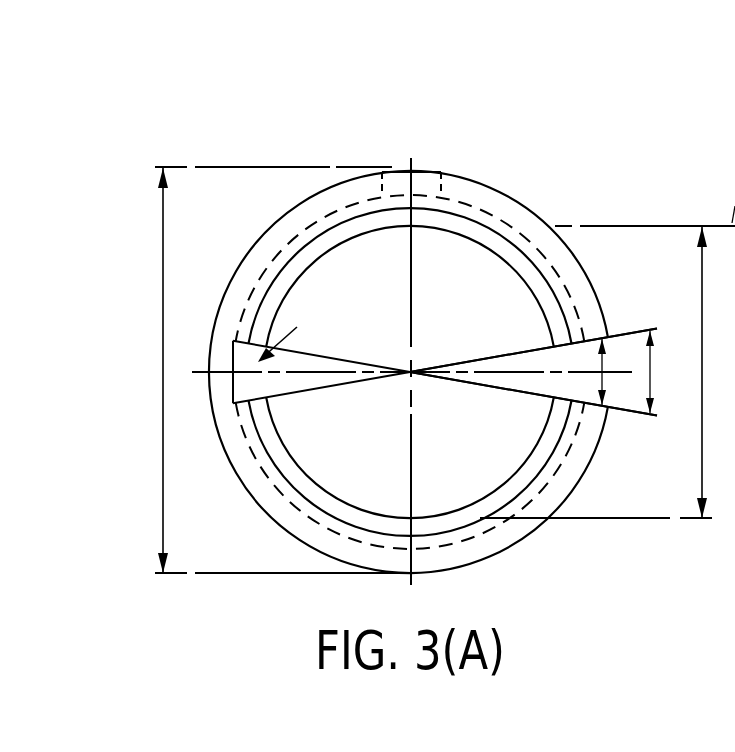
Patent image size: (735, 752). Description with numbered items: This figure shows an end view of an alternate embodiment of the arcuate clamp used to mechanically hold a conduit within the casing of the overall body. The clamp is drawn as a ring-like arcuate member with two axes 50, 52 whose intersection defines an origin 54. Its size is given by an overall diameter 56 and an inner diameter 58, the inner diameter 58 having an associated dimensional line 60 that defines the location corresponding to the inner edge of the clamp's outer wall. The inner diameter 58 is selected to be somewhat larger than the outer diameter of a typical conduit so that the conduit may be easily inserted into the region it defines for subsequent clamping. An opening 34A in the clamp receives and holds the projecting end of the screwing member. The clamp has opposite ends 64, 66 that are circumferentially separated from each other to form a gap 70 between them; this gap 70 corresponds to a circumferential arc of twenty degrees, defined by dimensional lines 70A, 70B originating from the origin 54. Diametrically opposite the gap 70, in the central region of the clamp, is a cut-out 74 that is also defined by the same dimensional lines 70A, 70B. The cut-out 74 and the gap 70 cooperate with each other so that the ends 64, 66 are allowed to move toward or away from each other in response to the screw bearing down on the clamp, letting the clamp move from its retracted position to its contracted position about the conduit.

The opening 34A is at (430, 170).
The axis 50 is at (412, 297).
The axis 52 is at (552, 363).
The origin 54 is at (412, 371).
The overall diameter 56 is at (163, 352).
The inner diameter 58 is at (703, 402).
The dimensional line 60 is at (714, 80).
The end 64 is at (609, 316).
The end 66 is at (602, 448).
The gap 70 is at (605, 364).
The dimensional line 70A is at (482, 359).
The dimensional line 70B is at (320, 356).
The cut-out 74 is at (297, 327).